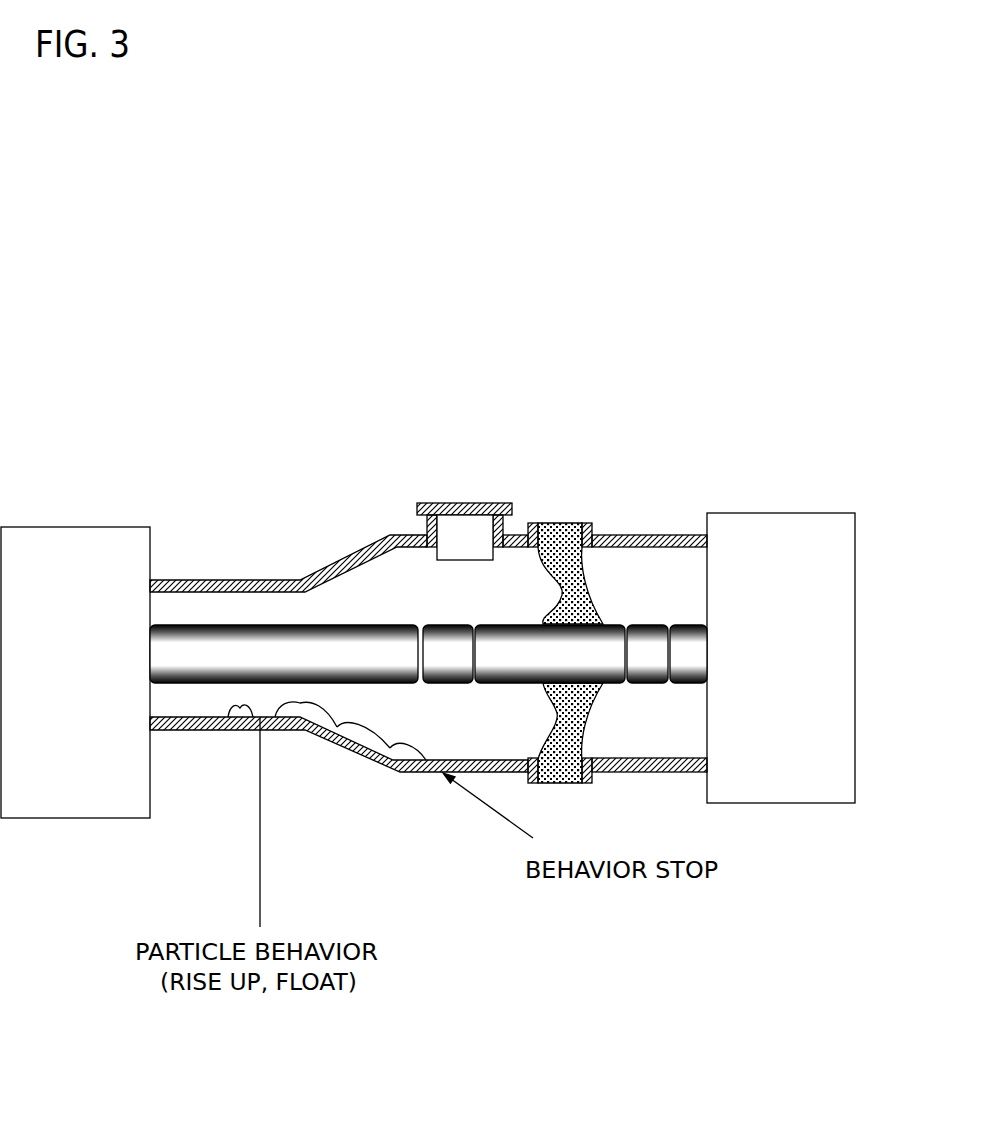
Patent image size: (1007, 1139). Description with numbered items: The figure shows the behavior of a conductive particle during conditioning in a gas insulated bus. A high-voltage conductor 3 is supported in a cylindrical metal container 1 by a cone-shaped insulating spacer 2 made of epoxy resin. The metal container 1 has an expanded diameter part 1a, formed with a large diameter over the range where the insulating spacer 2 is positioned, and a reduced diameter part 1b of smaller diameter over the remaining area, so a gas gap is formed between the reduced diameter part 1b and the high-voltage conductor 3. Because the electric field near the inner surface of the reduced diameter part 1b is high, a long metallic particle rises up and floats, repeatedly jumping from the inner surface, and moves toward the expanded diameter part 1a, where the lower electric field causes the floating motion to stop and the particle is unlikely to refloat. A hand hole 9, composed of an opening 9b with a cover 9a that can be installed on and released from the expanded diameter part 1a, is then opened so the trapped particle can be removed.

The metal container 1 is at (273, 558).
The expanded diameter part 1a is at (645, 535).
The reduced diameter part 1b is at (180, 729).
The insulating spacer 2 is at (571, 535).
The high-voltage conductor 3 is at (219, 650).
The hand hole 9 is at (489, 480).
The cover 9a is at (441, 545).
The opening 9b is at (427, 528).